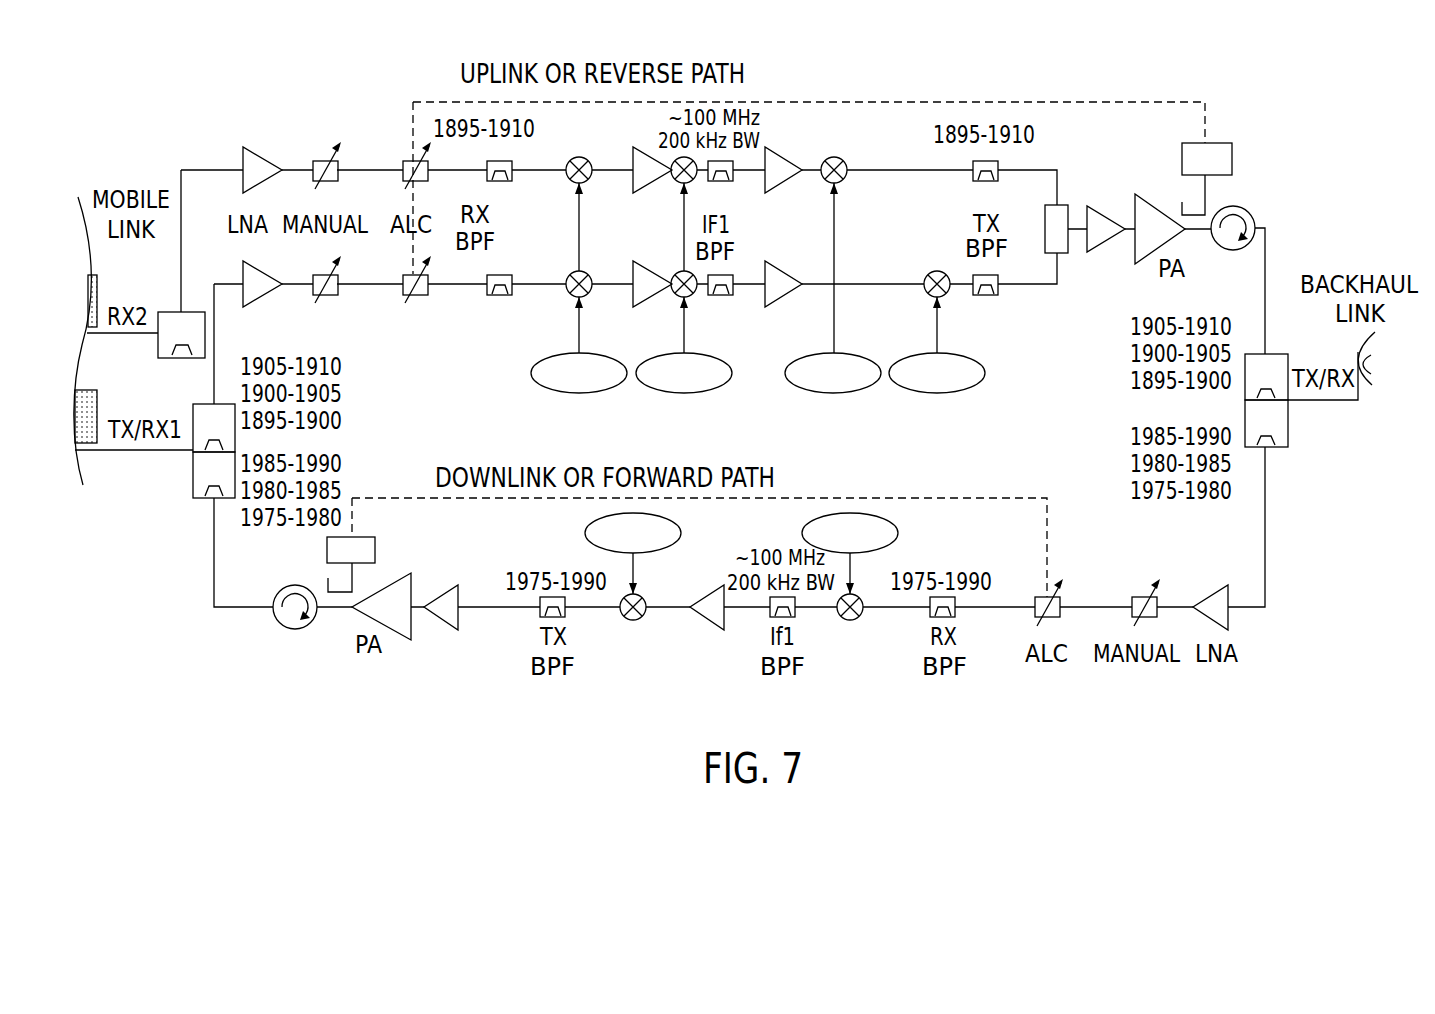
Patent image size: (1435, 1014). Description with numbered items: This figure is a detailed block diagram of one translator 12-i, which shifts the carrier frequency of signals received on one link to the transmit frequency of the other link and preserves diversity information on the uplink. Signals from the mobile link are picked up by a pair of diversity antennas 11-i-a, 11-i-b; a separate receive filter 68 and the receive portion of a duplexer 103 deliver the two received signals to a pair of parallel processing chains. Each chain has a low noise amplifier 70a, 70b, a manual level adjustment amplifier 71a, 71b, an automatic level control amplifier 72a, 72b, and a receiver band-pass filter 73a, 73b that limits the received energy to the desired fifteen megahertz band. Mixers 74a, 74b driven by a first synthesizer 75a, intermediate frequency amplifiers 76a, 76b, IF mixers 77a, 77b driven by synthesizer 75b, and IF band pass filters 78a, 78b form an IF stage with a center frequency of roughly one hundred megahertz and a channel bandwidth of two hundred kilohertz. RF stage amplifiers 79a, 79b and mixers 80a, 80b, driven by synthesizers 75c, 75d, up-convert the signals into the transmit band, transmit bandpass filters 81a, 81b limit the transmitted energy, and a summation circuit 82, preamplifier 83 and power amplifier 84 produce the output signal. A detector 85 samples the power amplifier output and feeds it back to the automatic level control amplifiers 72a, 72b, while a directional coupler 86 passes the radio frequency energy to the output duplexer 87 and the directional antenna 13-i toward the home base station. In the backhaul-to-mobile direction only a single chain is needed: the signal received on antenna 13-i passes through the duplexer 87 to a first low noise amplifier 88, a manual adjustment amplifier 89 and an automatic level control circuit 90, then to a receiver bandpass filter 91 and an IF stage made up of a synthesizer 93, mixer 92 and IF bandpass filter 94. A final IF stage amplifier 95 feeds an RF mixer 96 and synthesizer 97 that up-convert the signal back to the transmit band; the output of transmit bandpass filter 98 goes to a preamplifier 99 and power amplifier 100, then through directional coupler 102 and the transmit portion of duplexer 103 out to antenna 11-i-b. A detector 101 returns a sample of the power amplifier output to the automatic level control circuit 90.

The translator 12-i is at (1079, 24).
The diversity antenna 11-i-a is at (97, 297).
The diversity antenna 11-i-b is at (97, 410).
The translator directional antenna 13-i is at (1362, 362).
The receive filter 68 is at (185, 312).
The low noise amplifier 70a is at (262, 157).
The low noise amplifier 70b is at (265, 294).
The manual level adjustment amplifier 71a is at (340, 166).
The manual level adjustment amplifier 71b is at (340, 280).
The automatic level control amplifier 72a is at (431, 168).
The automatic level control amplifier 72b is at (431, 282).
The receiver band-pass filter 73a is at (512, 181).
The receiver band-pass filter 73b is at (512, 295).
The mixer 74a is at (583, 158).
The mixer 74b is at (583, 272).
The first synthesizer 75a is at (594, 392).
The synthesizer 75b is at (690, 392).
The synthesizer 75c is at (843, 392).
The synthesizer 75d is at (950, 392).
The intermediate frequency amplifier 76a is at (656, 180).
The intermediate frequency amplifier 76b is at (650, 272).
The IF mixer 77a is at (691, 181).
The IF mixer 77b is at (690, 297).
The IF band pass filter 78a is at (728, 181).
The IF band pass filter 78b is at (728, 295).
The RF stage amplifier 79a is at (778, 155).
The amplifier 79b is at (778, 269).
The mixer 80a is at (837, 158).
The mixer 80b is at (940, 272).
The transmit bandpass filter 81a is at (998, 163).
The transmit bandpass filter 81b is at (998, 295).
The summation circuit 82 is at (1064, 205).
The preamplifier 83 is at (1100, 213).
The power amplifier 84 is at (1143, 200).
The detector 85 is at (1224, 143).
The directional coupler 86 is at (1247, 210).
The output duplexer 87 is at (1275, 354).
The first low noise amplifier 88 is at (1228, 590).
The manual adjustment amplifier 89 is at (1158, 606).
The automatic level control circuit 90 is at (1060, 606).
The receiver bandpass filter 91 is at (955, 617).
The mixer 92 is at (862, 617).
The synthesizer 93 is at (897, 540).
The IF bandpass filter 94 is at (795, 617).
The final IF stage amplifier 95 is at (724, 617).
The RF mixer 96 is at (645, 616).
The synthesizer 97 is at (680, 540).
The transmit bandpass filter 98 is at (565, 617).
The preamplifier 99 is at (458, 622).
The power amplifier 100 is at (411, 640).
The detector 101 is at (375, 560).
The directional coupler 102 is at (305, 628).
The duplexer 103 is at (193, 496).